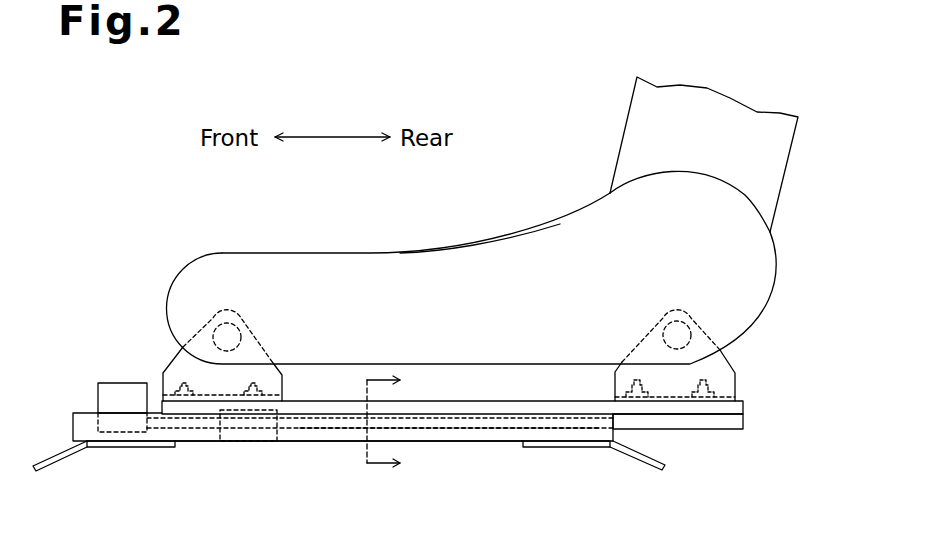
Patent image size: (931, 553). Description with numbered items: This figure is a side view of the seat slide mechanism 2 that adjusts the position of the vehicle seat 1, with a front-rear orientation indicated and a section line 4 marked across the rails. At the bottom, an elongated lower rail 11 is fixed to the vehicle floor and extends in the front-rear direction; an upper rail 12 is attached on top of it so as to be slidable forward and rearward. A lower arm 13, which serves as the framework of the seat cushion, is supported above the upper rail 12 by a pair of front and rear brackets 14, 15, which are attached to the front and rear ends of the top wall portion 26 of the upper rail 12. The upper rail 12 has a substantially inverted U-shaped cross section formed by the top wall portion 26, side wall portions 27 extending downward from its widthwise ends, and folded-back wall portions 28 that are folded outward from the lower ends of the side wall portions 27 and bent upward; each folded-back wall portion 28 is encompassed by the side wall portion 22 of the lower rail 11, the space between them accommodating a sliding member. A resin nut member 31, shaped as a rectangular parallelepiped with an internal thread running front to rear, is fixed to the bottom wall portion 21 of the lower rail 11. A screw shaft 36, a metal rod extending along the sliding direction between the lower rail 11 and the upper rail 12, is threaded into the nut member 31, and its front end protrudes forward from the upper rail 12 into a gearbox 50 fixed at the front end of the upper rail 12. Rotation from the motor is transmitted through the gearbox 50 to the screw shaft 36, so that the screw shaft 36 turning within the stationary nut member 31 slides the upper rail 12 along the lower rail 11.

The seat 1 is at (537, 133).
The seat slide mechanism 2 is at (152, 332).
The line 4- 4 is at (396, 422).
The lower rail 11 is at (463, 442).
The upper rail 12 is at (700, 430).
The lower arm 13 is at (458, 259).
The front bracket 14 is at (282, 375).
The rear bracket 15 is at (620, 368).
The bottom wall portion 21 is at (203, 442).
The side wall portion 22 is at (77, 425).
The top wall portion 26 is at (727, 397).
The side wall portion 27 is at (742, 407).
The folded-back wall portion 28 is at (743, 425).
The nut member 31 is at (257, 437).
The screw shaft 36 is at (508, 423).
The gearbox 50 is at (125, 383).